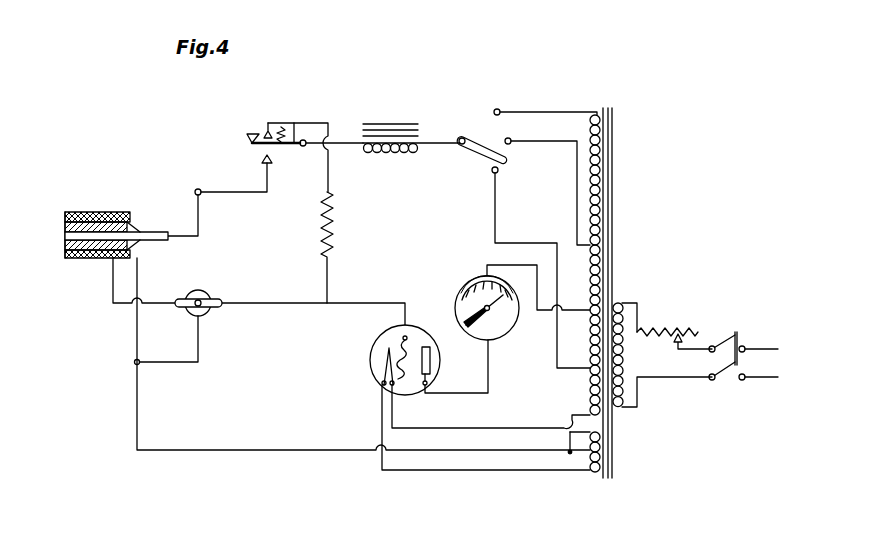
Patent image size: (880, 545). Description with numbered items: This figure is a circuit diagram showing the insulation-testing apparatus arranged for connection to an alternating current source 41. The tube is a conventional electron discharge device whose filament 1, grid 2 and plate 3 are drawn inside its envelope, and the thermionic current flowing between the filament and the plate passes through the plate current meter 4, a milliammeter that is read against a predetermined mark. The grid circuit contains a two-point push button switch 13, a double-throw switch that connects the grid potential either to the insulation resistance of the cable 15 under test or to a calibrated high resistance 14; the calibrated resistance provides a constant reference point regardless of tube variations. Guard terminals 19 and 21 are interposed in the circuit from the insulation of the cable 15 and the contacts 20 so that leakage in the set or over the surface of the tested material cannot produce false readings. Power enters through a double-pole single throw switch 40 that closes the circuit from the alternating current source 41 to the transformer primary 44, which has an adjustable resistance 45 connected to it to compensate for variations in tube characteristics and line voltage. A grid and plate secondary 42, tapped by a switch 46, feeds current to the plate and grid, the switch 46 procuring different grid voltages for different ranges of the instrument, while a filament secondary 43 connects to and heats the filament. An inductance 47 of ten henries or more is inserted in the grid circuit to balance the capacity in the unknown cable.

The filament 1 is at (372, 368).
The grid 2 is at (408, 345).
The plate 3 is at (430, 360).
The plate current meter 4 is at (505, 330).
The two-point push button switch 13 is at (296, 140).
The calibrated high resistance 14 is at (333, 236).
The cable 15 is at (92, 262).
The guard terminal 19 is at (140, 214).
The contacts 20 is at (200, 189).
The guard terminal 21 is at (204, 316).
The double-pole single throw switch 40 is at (741, 340).
The alternating current source 41 is at (775, 363).
The grid and plate secondary 42 is at (602, 216).
The filament secondary 43 is at (589, 475).
The transformer primary 44 is at (632, 321).
The adjustable resistance 45 is at (687, 325).
The switch 46 is at (500, 110).
The inductance 47 is at (400, 123).